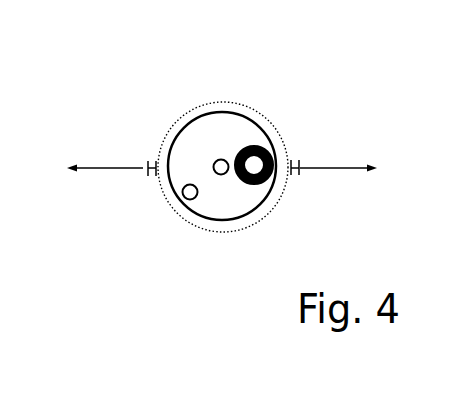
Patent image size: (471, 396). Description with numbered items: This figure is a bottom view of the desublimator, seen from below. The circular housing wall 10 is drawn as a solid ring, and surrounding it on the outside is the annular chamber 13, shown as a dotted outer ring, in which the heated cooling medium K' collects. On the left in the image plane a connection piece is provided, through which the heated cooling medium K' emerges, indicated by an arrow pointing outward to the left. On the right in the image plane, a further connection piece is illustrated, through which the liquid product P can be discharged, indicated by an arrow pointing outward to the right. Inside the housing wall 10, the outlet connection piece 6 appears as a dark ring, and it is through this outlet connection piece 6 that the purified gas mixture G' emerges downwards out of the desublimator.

The annular chamber 13 is at (180, 126).
The housing wall 10 is at (207, 217).
The outlet connection piece 6 is at (247, 193).
The purified gas mixture G' is at (302, 115).
The heated cooling medium K' is at (99, 167).
The liquid product P is at (342, 168).